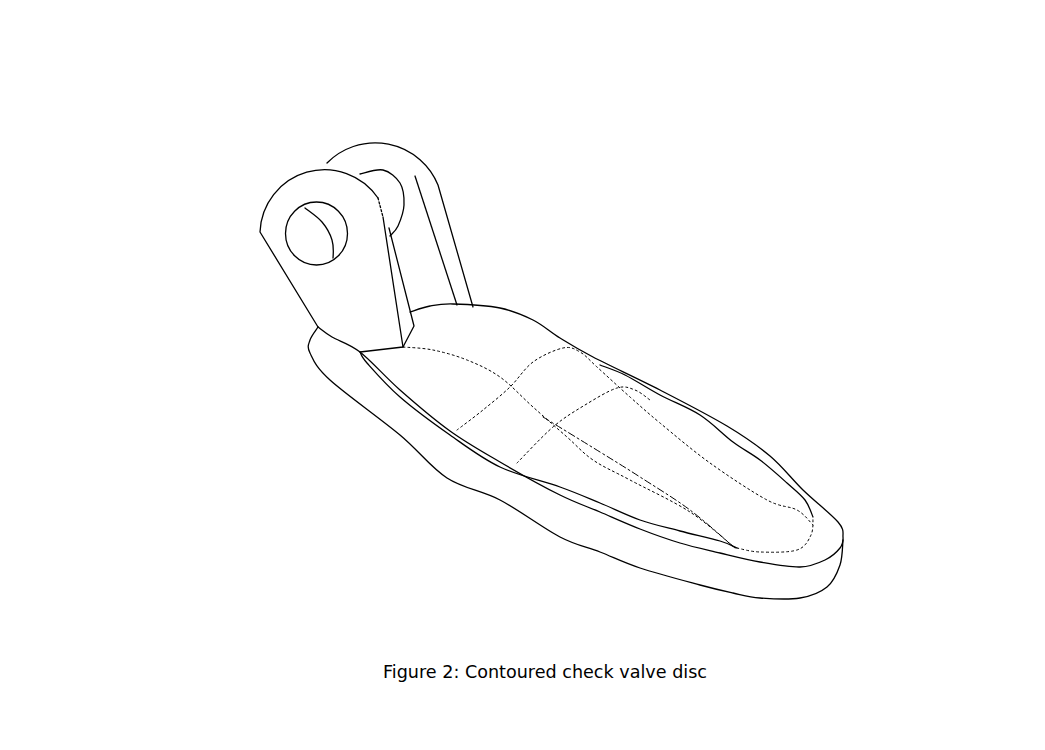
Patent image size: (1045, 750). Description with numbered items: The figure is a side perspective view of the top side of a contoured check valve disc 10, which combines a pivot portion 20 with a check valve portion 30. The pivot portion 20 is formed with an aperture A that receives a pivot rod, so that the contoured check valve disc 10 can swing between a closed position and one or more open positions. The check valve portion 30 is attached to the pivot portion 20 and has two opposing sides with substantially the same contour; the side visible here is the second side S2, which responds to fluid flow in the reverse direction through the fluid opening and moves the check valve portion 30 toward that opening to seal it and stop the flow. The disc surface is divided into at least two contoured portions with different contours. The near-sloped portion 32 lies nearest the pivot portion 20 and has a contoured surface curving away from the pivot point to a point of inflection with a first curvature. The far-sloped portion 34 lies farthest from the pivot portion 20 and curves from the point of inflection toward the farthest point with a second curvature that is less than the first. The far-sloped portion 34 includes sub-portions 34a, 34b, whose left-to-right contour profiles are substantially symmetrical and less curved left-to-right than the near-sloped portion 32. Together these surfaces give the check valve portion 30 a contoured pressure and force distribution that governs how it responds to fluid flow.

The contoured check valve disc 10 is at (152, 138).
The aperture A is at (389, 198).
The pivot portion 20 is at (418, 233).
The near-sloped portion 32 is at (538, 309).
The second side S2 is at (710, 305).
The far-sloped portion 34 is at (778, 348).
The sub-portion 34a is at (610, 372).
The sub-portion 34b is at (679, 433).
The check valve portion 30 is at (794, 454).